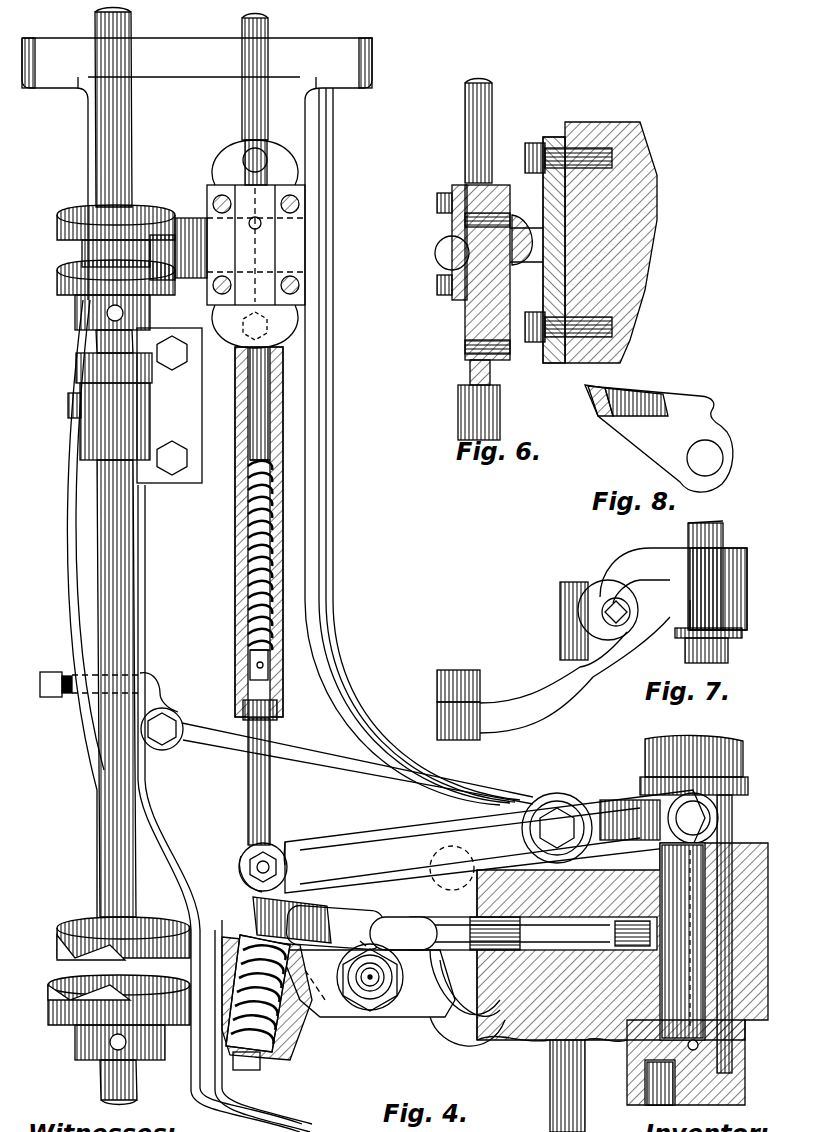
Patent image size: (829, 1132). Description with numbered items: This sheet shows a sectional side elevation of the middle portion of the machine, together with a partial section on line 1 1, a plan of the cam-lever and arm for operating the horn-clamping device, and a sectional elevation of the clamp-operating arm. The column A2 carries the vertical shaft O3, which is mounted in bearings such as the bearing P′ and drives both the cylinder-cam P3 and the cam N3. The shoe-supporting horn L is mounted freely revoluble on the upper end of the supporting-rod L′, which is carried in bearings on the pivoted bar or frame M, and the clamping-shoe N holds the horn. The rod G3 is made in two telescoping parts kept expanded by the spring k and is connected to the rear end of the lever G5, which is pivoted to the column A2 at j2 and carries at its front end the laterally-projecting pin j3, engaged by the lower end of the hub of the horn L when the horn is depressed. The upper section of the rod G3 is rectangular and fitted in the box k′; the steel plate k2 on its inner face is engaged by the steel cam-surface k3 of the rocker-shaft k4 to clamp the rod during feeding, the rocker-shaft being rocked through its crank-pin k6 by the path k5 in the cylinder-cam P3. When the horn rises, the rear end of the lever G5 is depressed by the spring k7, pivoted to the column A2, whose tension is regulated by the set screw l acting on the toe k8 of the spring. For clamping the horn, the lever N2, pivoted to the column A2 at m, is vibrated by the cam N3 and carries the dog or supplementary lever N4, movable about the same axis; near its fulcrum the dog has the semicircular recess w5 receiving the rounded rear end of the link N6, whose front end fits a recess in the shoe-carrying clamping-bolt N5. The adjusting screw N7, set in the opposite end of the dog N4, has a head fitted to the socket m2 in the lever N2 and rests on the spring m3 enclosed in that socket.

In FIG. 4, the shaft O3 is at (122, 119).
In FIG. 4, the rod G3 is at (268, 56).
In FIG. 6, the rod G3 is at (490, 138).
In FIG. 4, the section line 1 is at (251, 126).
In FIG. 4, the box k′ is at (256, 244).
In FIG. 6, the box k′ is at (546, 136).
In FIG. 4, the rocker-shaft k4 is at (190, 222).
In FIG. 6, the rocker-shaft k4 is at (527, 229).
In FIG. 4, the crank-pin k6 is at (162, 257).
In FIG. 6, the crank-pin k6 is at (436, 254).
In FIG. 4, the path k5 is at (63, 247).
In FIG. 4, the cylinder-cam P3 is at (140, 209).
In FIG. 4, the bearing P′ is at (150, 411).
In FIG. 4, the spring k is at (246, 522).
In FIG. 4, the set screw l is at (90, 684).
In FIG. 4, the toe k8 is at (150, 690).
In FIG. 4, the spring k7 is at (323, 766).
In FIG. 4, the lever G5 is at (472, 841).
In FIG. 4, the pivot j2 is at (557, 828).
In FIG. 4, the laterally-projecting pin j3 is at (693, 818).
In FIG. 4, the shoe-supporting horn L is at (745, 769).
In FIG. 4, the supporting-rod L′ is at (733, 833).
In FIG. 4, the clamping-shoe N is at (660, 956).
In FIG. 4, the shoe-carrying clamping-bolt N5 is at (533, 933).
In FIG. 4, the pivoted bar or frame M is at (633, 1070).
In FIG. 4, the adjusting screw N7 is at (262, 922).
In FIG. 4, the dog or supplementary lever N4 is at (335, 928).
In FIG. 7, the dog or supplementary lever N4 is at (673, 589).
In FIG. 4, the semicircular recess w5 is at (356, 942).
In FIG. 8, the semicircular recess w5 is at (721, 424).
In FIG. 4, the link N6 is at (403, 933).
In FIG. 7, the link N6 is at (599, 615).
In FIG. 4, the lever N2 is at (335, 1006).
In FIG. 8, the lever N2 is at (659, 438).
In FIG. 7, the lever N2 is at (553, 678).
In FIG. 4, the pivot m is at (372, 985).
In FIG. 7, the pivot m is at (724, 530).
In FIG. 4, the socket m2 is at (298, 1003).
In FIG. 4, the spring m3 is at (284, 1038).
In FIG. 4, the cam N3 is at (75, 962).
In FIG. 4, the column A2 is at (342, 1098).
In FIG. 6, the column A2 is at (615, 242).
In FIG. 6, the steel cam-surface k3 is at (526, 257).
In FIG. 6, the steel plate k2 is at (508, 286).